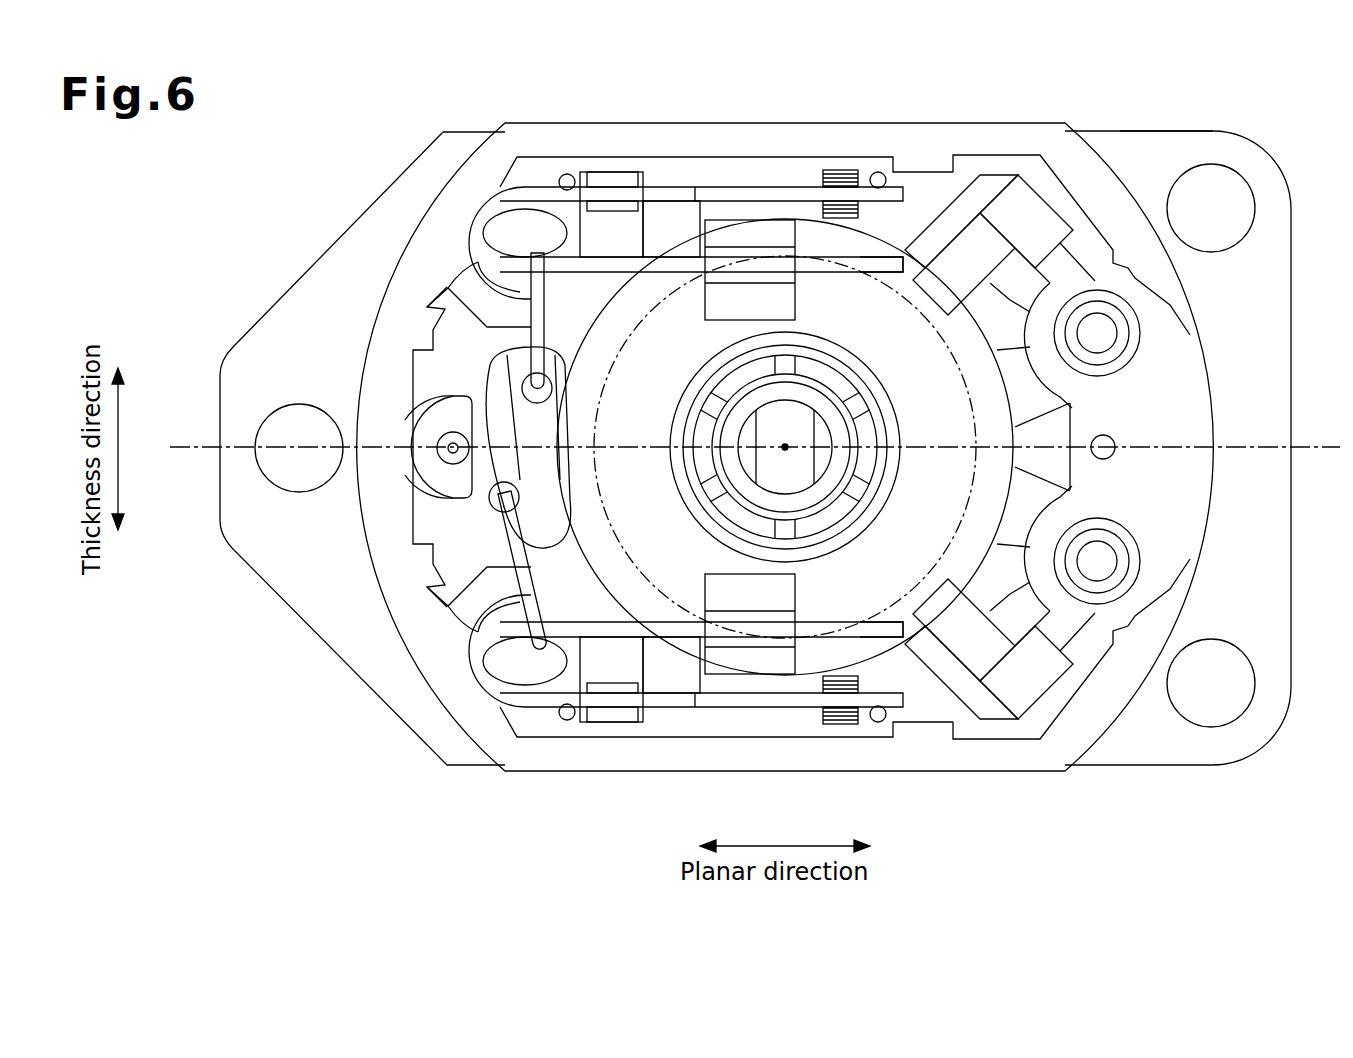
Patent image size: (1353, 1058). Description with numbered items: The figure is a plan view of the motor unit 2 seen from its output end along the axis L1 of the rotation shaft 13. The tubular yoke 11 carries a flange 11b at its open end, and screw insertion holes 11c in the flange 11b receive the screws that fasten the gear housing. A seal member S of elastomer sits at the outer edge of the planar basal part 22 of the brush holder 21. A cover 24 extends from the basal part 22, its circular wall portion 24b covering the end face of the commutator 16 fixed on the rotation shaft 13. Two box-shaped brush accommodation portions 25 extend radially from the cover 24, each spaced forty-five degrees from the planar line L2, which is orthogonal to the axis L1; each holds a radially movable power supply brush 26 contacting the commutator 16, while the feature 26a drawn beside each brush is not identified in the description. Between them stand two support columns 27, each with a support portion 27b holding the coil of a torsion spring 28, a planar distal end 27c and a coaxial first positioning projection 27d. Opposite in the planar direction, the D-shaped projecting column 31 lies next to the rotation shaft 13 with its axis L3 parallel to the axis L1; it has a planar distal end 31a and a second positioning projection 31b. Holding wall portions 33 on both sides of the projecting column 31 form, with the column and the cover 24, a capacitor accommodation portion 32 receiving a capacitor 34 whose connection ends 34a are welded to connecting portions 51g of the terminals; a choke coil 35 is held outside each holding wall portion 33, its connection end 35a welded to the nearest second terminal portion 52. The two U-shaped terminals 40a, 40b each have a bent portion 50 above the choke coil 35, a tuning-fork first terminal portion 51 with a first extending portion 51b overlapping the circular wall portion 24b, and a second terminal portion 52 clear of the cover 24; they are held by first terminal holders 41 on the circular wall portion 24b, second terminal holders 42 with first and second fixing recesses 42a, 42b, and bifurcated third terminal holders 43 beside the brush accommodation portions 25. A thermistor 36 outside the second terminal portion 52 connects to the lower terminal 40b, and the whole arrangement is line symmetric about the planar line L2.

The motor unit 2 is at (1250, 110).
The yoke housing 11 is at (1292, 190).
The flange 11b is at (1172, 140).
The screw insertion holes 11c is at (312, 400).
The rotation shaft 13 is at (767, 432).
The commutator 16 is at (1063, 470).
The brush holder 21 is at (1112, 157).
The basal part 22 is at (720, 172).
The cover 24 is at (858, 667).
The circular wall portion 24b is at (687, 647).
The brush accommodation portion 25 is at (990, 240).
The power supply brush 26 is at (948, 318).
The engaging pin 26a is at (905, 186).
The support column 27 is at (1161, 455).
The support portion 27b is at (1133, 313).
The distal end 27c is at (1133, 328).
The first positioning projection 27d is at (1137, 340).
The torsion spring 28 is at (1137, 377).
The projecting column 31 is at (417, 490).
The distal end 31a is at (428, 420).
The second positioning projection 31b is at (443, 475).
The capacitor accommodation portion 32 is at (470, 498).
The holding wall portion 33 is at (463, 297).
The capacitor 34 is at (550, 490).
The connection ends 34a is at (547, 345).
The choke coil 35 is at (477, 272).
The connection end 35a is at (548, 176).
The thermistor 36 is at (737, 714).
The terminal 40a is at (478, 205).
The terminal 40b is at (473, 687).
The first terminal holder 41 is at (796, 305).
The second terminal holder 42 is at (640, 160).
The first fixing recess 42a is at (620, 272).
The second fixing recess 42b is at (616, 175).
The third terminal holder 43 is at (840, 170).
The bent portion 50 is at (469, 228).
The first terminal portion 51 is at (707, 447).
The first extending portion 51b is at (878, 273).
The connecting portion 51g is at (518, 447).
The second terminal portion 52 is at (743, 190).
The seal member S is at (983, 137).
The axis of the rotation shaft L1 is at (788, 455).
The planar line L2 is at (1322, 442).
The axis of the projecting column L3 is at (453, 440).